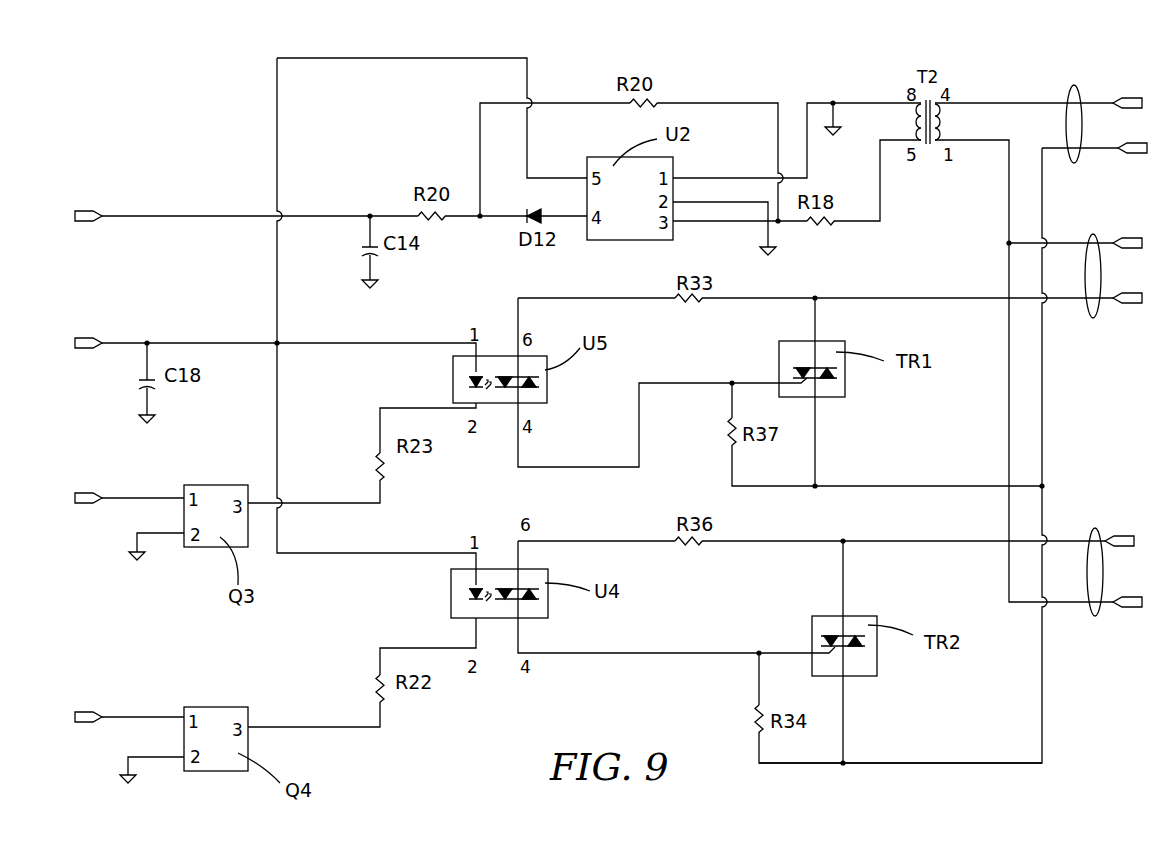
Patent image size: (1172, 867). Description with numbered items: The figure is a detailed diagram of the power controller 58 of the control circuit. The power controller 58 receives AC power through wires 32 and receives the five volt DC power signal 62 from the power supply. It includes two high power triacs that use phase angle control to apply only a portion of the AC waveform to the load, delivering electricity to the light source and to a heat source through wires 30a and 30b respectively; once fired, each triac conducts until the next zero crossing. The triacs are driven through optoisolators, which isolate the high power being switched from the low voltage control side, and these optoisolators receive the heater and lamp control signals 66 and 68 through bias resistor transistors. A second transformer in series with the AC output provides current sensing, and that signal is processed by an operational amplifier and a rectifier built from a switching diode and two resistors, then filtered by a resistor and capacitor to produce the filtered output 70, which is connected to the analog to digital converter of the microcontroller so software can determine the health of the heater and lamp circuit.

The power controller 58 is at (176, 91).
The filtered output 70 is at (167, 215).
The 5 volt DC power signal 62 is at (130, 340).
The heater control signal 66 is at (125, 497).
The lamp control signal 68 is at (140, 715).
The wires 32 is at (1074, 163).
The wires 30a is at (1093, 318).
The wires 30b is at (1095, 528).